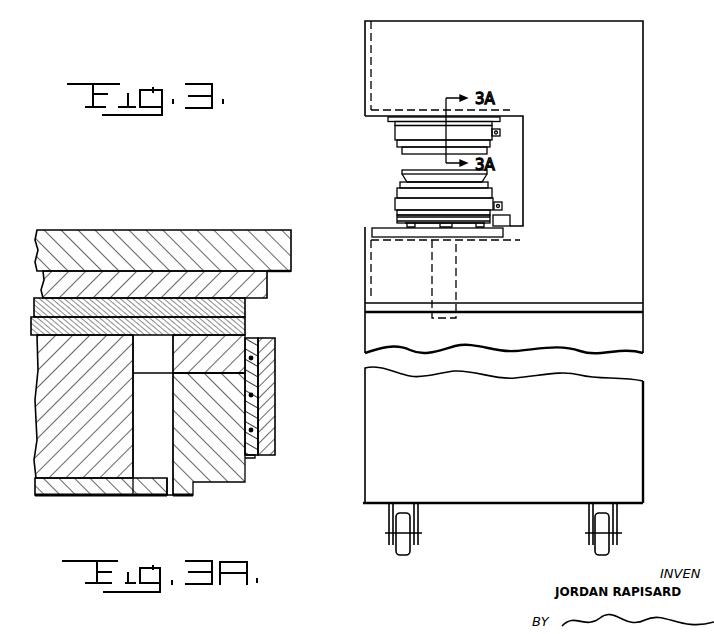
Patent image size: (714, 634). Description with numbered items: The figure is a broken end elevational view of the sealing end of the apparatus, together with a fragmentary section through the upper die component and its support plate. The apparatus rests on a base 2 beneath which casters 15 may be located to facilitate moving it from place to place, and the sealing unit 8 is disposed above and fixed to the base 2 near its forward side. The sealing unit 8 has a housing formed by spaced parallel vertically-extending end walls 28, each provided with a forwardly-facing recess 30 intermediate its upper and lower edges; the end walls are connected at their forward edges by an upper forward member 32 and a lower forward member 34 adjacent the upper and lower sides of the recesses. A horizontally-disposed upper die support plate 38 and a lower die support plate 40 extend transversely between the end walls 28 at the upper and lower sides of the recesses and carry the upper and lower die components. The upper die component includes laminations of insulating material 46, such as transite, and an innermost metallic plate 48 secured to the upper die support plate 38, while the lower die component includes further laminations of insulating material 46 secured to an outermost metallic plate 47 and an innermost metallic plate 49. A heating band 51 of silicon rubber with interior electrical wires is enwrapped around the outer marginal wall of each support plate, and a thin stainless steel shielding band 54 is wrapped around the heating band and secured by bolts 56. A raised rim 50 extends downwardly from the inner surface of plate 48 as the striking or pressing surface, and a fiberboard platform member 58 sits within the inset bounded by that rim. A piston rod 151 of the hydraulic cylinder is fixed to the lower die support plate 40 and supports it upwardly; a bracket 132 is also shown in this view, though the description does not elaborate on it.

In FIG. 3, the base 2 is at (700, 393).
In FIG. 3, the sealing unit 8 is at (300, 118).
In FIG. 3, the casters 15 is at (590, 545).
In FIG. 3, the end walls 28 is at (587, 93).
In FIG. 3, the recess 30 is at (526, 130).
In FIG. 3, the upper forward member 32 is at (370, 44).
In FIG. 3, the lower forward member 34 is at (368, 262).
In FIG. 3, the upper die support plate 38 is at (397, 107).
In FIG. 3A, the upper die support plate 38 is at (160, 258).
In FIG. 3, the lower die support plate 40 is at (476, 238).
In FIG. 3, the laminations of insulating material 46 is at (388, 120).
In FIG. 3A, the laminations of insulating material 46 is at (245, 317).
In FIG. 3, the outermost metallic plate 47 is at (420, 223).
In FIG. 3, the innermost metallic plate 48 is at (395, 144).
In FIG. 3A, the innermost metallic plate 48 is at (164, 294).
In FIG. 3, the innermost metallic plate 49 is at (393, 189).
In FIG. 3, the raised rim 50 is at (400, 153).
In FIG. 3A, the raised rim 50 is at (185, 496).
In FIG. 3A, the heating band 51 is at (255, 456).
In FIG. 3, the shielding band 54 is at (497, 136).
In FIG. 3A, the shielding band 54 is at (276, 360).
In FIG. 3, the bolts 56 is at (500, 136).
In FIG. 3A, the platform member 58 is at (118, 497).
In FIG. 3, the bracket 132 is at (515, 219).
In FIG. 3, the piston rod 151 is at (456, 289).